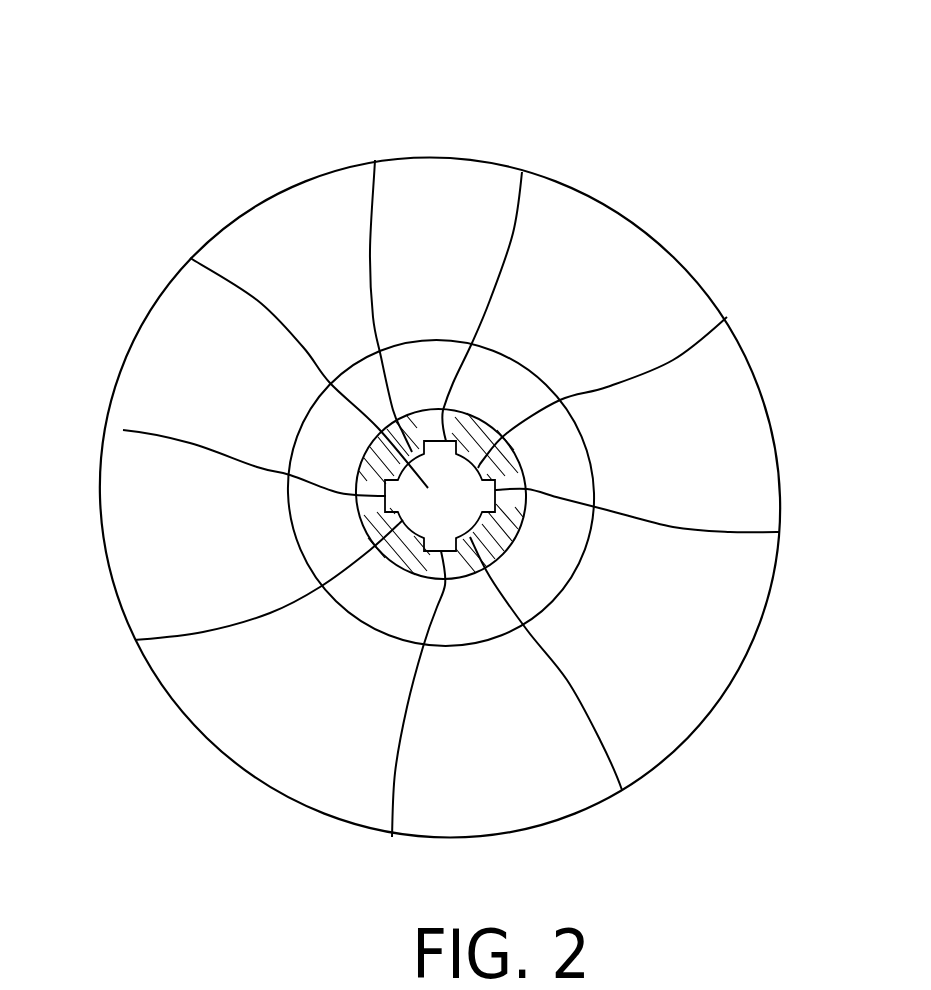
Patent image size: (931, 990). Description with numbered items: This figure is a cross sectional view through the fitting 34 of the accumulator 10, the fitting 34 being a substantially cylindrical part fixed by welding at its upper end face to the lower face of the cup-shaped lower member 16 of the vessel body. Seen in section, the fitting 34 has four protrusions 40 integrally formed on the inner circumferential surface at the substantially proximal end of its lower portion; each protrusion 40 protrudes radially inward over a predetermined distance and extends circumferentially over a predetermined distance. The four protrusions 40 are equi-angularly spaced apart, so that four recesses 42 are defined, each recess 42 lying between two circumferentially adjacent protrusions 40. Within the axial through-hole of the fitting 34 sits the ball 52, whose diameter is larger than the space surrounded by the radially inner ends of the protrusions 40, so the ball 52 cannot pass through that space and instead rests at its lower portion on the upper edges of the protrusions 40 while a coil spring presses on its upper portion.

The accumulator 10 is at (721, 147).
The lower member 16 is at (796, 420).
The fitting 34 is at (574, 621).
The protrusions 40 is at (375, 160).
The recesses 42 is at (522, 172).
The ball 52 is at (190, 258).